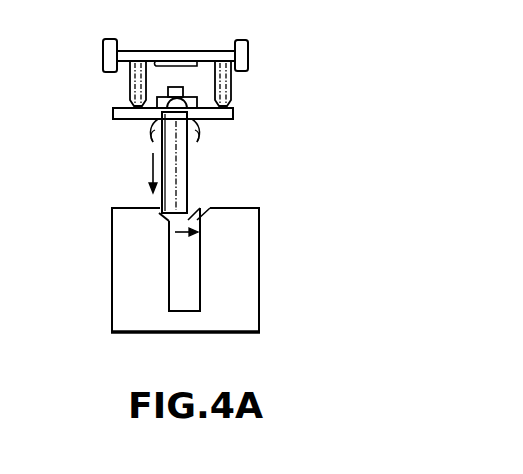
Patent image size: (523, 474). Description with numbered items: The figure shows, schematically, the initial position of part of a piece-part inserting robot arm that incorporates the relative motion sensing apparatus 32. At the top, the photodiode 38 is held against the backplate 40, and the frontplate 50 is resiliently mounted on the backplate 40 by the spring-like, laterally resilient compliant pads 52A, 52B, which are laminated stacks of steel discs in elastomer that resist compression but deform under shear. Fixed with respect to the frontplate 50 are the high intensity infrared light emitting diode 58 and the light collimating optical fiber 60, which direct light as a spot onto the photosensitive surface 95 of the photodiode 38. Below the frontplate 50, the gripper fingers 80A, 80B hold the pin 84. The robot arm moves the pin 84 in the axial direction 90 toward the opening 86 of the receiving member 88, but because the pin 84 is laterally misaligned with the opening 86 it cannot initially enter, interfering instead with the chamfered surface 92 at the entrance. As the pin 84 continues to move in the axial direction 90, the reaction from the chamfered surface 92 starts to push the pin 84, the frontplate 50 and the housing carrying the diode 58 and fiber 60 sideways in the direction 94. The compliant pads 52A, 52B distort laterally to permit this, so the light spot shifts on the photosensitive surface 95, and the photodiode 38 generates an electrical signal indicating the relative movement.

The relative motion sensing apparatus 32 is at (99, 57).
The photodiode 38 is at (184, 51).
The backplate 40 is at (248, 44).
The photosensitive surface 95 is at (154, 62).
The compliant pad 52A is at (130, 88).
The compliant pad 52B is at (226, 90).
The optical fiber 60 is at (176, 87).
The light emitting diode 58 is at (195, 98).
The frontplate 50 is at (233, 115).
The gripper finger 80A is at (155, 126).
The gripper finger 80B is at (200, 126).
The pin 84 is at (183, 172).
The axial direction 90 is at (148, 168).
The receiving member 88 is at (250, 213).
The opening 86 is at (175, 266).
The chamfered surface 92 is at (160, 213).
The lateral direction 94 is at (197, 216).